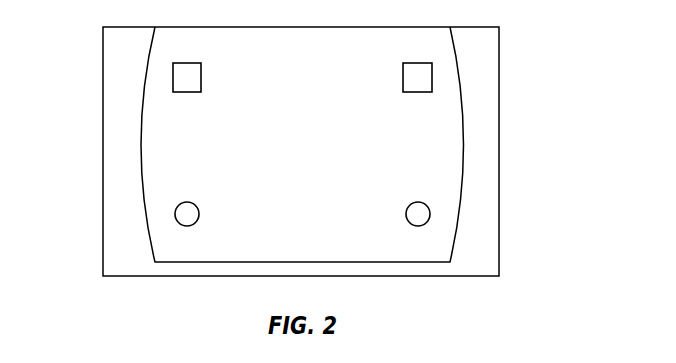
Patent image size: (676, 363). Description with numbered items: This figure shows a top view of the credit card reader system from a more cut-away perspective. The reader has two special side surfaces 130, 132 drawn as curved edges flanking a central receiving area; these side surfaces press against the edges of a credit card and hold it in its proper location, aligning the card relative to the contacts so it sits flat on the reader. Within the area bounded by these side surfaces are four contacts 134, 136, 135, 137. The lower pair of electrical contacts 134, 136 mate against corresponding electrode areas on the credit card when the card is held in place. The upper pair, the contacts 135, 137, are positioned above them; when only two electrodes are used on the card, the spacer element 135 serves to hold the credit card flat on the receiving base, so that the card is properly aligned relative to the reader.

The side surface 130 is at (463, 147).
The side surface 132 is at (141, 147).
The electrical contact 134 is at (194, 204).
The contact 135 is at (201, 77).
The electrical contact 136 is at (411, 204).
The contact 137 is at (403, 77).